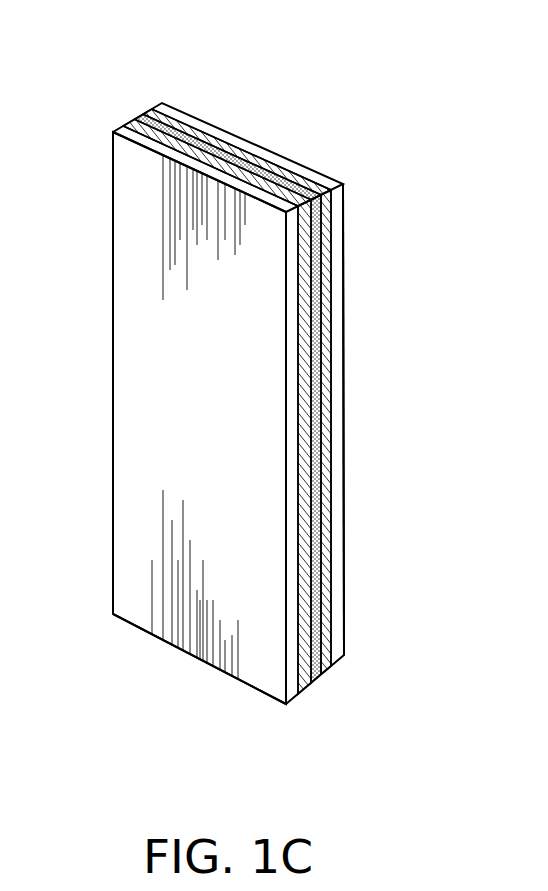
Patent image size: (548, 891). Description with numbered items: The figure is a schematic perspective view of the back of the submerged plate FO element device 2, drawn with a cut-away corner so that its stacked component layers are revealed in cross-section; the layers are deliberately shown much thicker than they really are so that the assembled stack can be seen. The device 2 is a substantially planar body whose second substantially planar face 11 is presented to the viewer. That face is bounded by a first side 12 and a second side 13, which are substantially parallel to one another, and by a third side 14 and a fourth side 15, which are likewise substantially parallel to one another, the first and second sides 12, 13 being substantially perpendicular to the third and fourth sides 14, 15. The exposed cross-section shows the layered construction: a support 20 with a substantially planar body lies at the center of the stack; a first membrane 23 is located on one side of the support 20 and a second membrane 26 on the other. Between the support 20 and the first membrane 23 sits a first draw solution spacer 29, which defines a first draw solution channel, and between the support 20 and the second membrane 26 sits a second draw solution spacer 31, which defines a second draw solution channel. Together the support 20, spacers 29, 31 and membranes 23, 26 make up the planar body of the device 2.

The submerged plate FO element device 2 is at (340, 128).
The second substantially planar face 11 is at (145, 263).
The first side 12 is at (185, 655).
The second side 13 is at (272, 147).
The third side 14 is at (112, 525).
The fourth side 15 is at (345, 415).
The support 20 is at (320, 670).
The first membrane 23 is at (222, 137).
The second membrane 26 is at (140, 383).
The first draw solution spacer 29 is at (325, 633).
The second draw solution spacer 31 is at (305, 682).